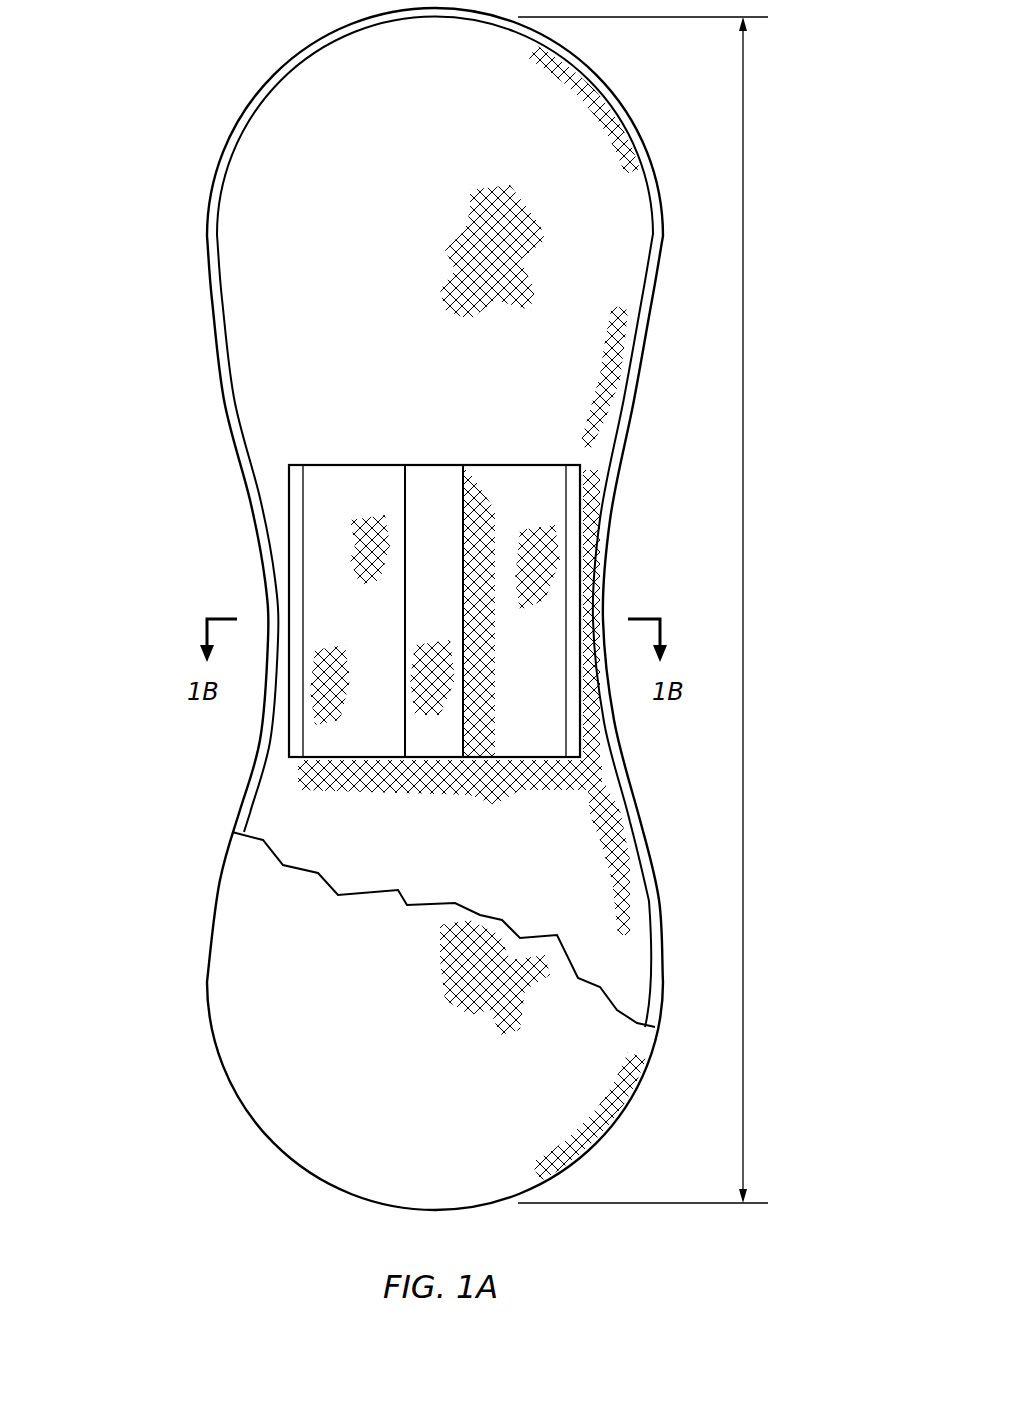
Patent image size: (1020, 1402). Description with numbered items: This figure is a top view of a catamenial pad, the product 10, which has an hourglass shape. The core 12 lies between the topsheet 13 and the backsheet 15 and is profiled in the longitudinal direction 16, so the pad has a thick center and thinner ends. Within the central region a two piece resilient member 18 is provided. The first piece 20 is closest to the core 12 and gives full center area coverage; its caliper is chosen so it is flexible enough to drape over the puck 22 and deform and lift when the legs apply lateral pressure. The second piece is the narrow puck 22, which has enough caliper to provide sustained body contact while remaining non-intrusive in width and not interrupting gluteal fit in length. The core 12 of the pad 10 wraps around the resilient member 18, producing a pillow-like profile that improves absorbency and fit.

The product 10 is at (154, 183).
The core 12 is at (372, 241).
The topsheet 13 is at (382, 1063).
The backsheet 15 is at (237, 404).
The longitudinal direction 16 is at (743, 620).
The two piece resilient member 18 is at (440, 740).
The first piece 20 is at (520, 720).
The puck 22 is at (435, 487).